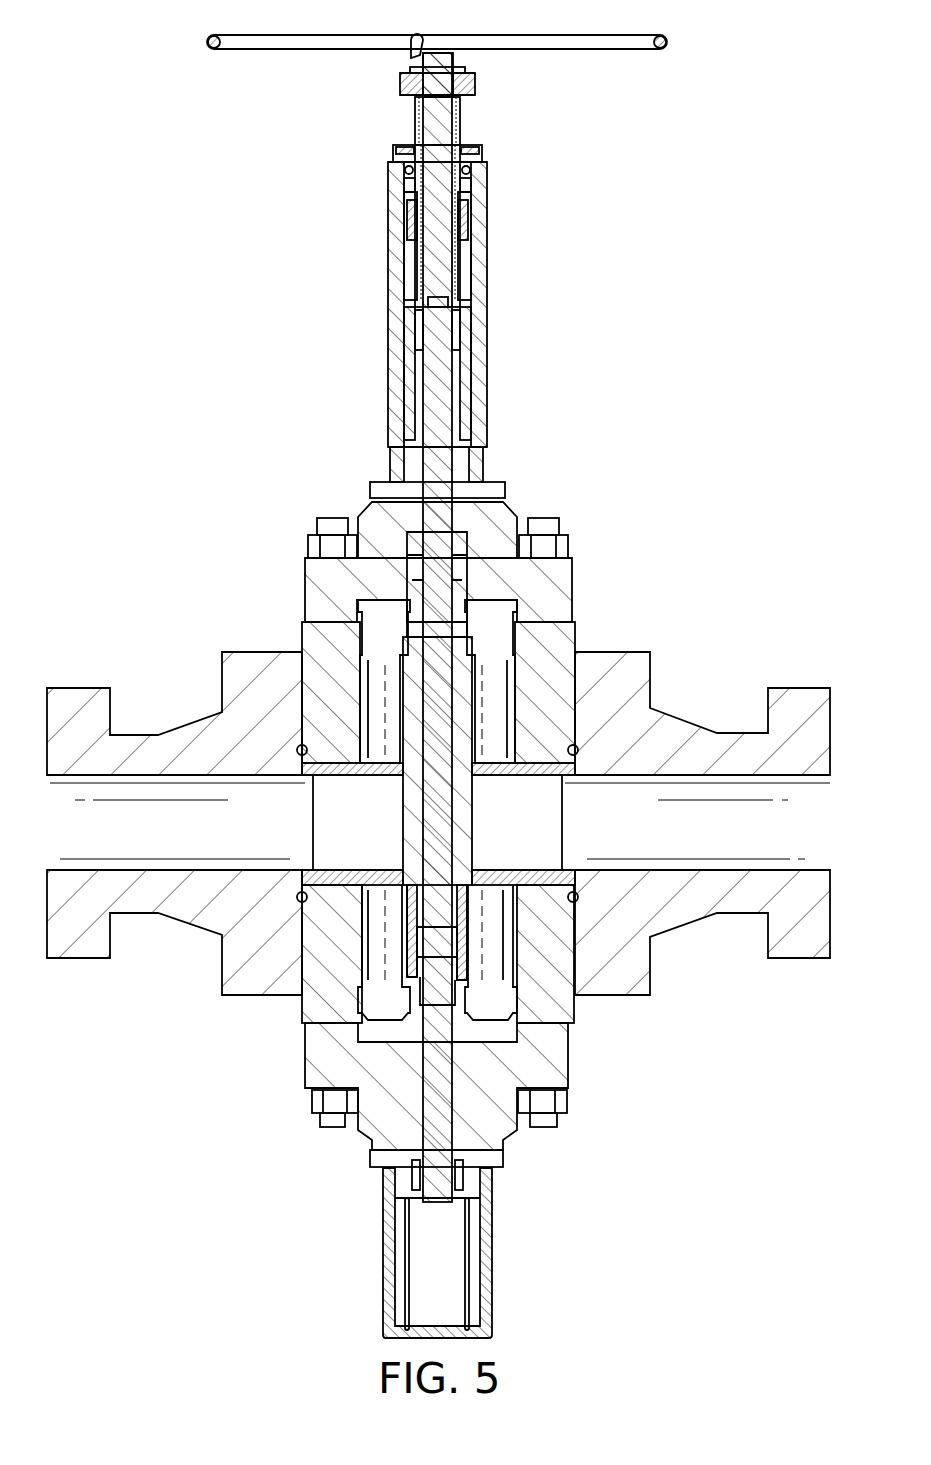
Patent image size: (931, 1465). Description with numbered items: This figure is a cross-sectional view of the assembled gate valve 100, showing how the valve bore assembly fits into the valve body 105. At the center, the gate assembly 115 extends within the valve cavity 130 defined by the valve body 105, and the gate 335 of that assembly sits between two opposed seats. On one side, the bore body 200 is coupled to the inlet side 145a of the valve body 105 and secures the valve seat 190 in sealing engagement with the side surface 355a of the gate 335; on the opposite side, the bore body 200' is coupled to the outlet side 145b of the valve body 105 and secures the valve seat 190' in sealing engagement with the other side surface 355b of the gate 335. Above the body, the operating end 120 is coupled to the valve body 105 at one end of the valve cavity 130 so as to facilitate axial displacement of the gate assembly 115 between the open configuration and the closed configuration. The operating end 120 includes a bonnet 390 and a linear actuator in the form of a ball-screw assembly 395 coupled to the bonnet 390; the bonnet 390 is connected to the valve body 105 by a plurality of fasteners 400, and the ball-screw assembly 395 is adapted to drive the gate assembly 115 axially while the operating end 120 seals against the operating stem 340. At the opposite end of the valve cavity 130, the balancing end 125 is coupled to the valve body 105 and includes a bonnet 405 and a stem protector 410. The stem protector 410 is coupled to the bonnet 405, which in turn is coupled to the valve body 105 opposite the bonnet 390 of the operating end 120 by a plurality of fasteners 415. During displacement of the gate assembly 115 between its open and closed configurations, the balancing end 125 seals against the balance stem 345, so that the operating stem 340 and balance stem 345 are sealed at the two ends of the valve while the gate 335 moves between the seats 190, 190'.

The gate valve 100 is at (160, 72).
The valve body 105 is at (302, 1016).
The gate assembly 115 is at (478, 745).
The operating end 120 is at (500, 250).
The balancing end 125 is at (505, 1238).
The valve cavity 130 is at (505, 915).
The inlet side 145a is at (300, 634).
The outlet side 145b is at (578, 634).
The valve seat 190 is at (202, 799).
The valve seat 190' is at (666, 799).
The bore body 200 is at (174, 823).
The bore body 200' is at (702, 823).
The gate 335 is at (445, 760).
The operating stem 340 is at (440, 380).
The balance stem 345 is at (440, 1108).
The side surface 355a is at (330, 830).
The side surface 355b is at (545, 830).
The bonnet 390 is at (305, 596).
The ball-screw assembly 395 is at (410, 222).
The fasteners 400 is at (308, 543).
The bonnet 405 is at (305, 1056).
The stem protector 410 is at (385, 1252).
The fasteners 415 is at (568, 1100).